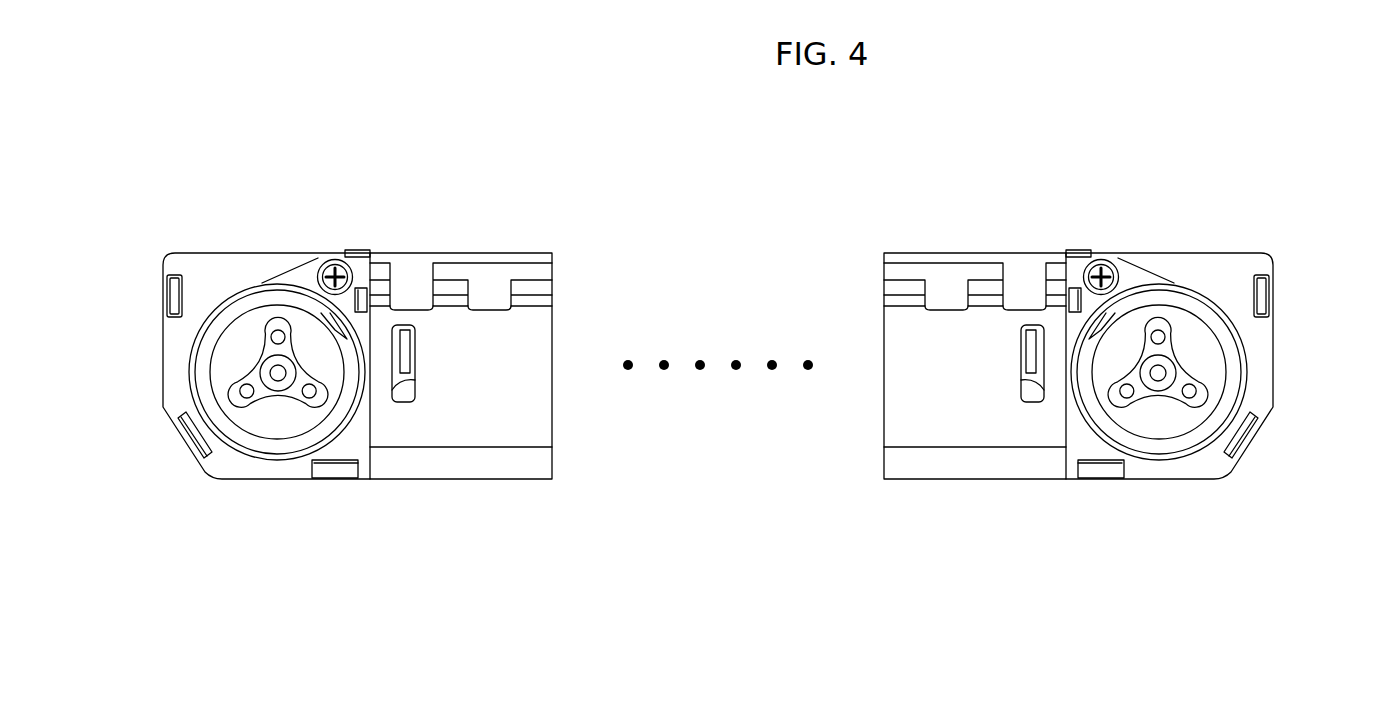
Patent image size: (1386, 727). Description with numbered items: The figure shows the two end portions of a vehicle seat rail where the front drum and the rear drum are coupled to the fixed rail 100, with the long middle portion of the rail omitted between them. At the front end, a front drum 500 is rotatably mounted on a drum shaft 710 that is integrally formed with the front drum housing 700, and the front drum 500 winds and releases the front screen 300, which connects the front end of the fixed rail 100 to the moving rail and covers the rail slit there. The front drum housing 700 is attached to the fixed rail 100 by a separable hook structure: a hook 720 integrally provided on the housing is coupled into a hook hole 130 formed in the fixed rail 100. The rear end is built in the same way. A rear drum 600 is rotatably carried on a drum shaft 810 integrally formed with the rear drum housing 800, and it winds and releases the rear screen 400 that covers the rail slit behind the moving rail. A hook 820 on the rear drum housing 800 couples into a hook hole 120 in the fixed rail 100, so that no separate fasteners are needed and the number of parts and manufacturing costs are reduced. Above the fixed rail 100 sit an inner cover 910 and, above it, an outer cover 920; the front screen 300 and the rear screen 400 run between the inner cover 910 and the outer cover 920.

The fixed rail 100 is at (532, 422).
The hook hole 120 is at (1032, 397).
The hook hole 130 is at (400, 397).
The front screen 300 is at (297, 268).
The rear screen 400 is at (1142, 268).
The front drum 500 is at (250, 420).
The rear drum 600 is at (1186, 422).
The front drum housing 700 is at (172, 345).
The drum shaft 710 is at (279, 388).
The hook 720 is at (405, 355).
The rear drum housing 800 is at (1264, 345).
The drum shaft 810 is at (1157, 388).
The hook 820 is at (1038, 403).
The inner cover 910 is at (529, 272).
The outer cover 920 is at (411, 258).